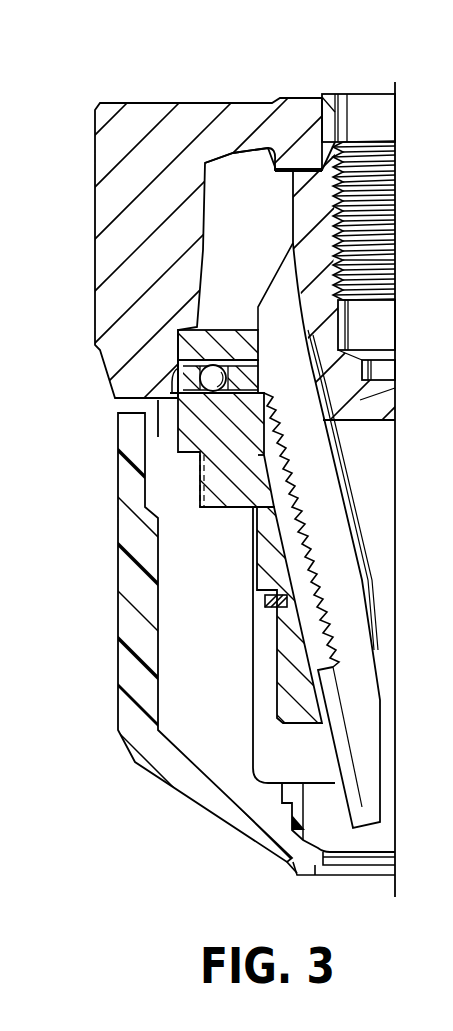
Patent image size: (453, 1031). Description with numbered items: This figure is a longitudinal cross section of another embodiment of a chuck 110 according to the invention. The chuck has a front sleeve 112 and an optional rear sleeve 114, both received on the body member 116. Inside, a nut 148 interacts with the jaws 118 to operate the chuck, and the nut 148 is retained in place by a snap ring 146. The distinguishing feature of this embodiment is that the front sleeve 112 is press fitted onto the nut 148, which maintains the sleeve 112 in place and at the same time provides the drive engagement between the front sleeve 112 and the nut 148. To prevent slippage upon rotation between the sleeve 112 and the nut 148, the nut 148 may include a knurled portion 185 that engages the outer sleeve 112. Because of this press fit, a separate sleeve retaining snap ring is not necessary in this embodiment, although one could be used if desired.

The chuck 110 is at (318, 56).
The front sleeve 112 is at (118, 692).
The rear sleeve 114 is at (95, 146).
The body member 116 is at (292, 688).
The jaws 118 is at (316, 462).
The snap ring 146 is at (266, 607).
The nut 148 is at (232, 495).
The knurled portion 185 is at (215, 478).